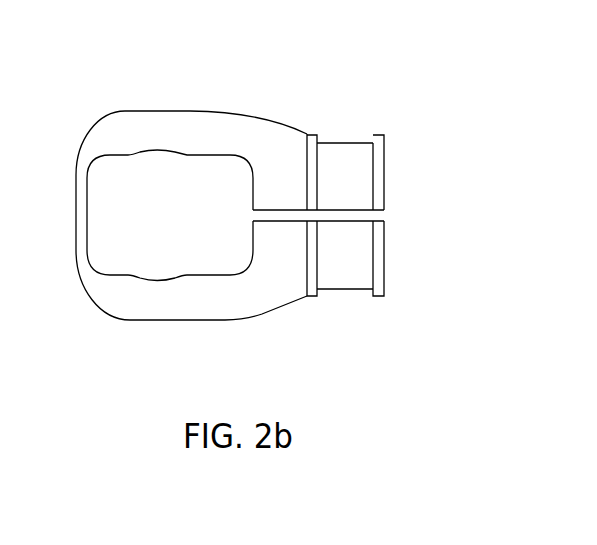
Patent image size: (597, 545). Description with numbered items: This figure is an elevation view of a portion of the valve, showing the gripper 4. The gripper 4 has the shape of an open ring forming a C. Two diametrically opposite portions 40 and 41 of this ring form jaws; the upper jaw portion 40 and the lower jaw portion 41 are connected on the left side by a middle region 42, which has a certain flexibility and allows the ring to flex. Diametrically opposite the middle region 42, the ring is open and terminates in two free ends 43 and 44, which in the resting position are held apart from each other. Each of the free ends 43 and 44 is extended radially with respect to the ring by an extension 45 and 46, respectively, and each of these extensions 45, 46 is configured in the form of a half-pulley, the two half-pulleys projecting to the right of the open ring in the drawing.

The gripper 4 is at (218, 206).
The portion forming jaw 40 is at (169, 117).
The portion forming jaw 41 is at (165, 308).
The middle region 42 is at (76, 210).
The free end 43 is at (315, 115).
The free end 44 is at (317, 318).
The extension 45 is at (362, 176).
The extension 46 is at (361, 253).